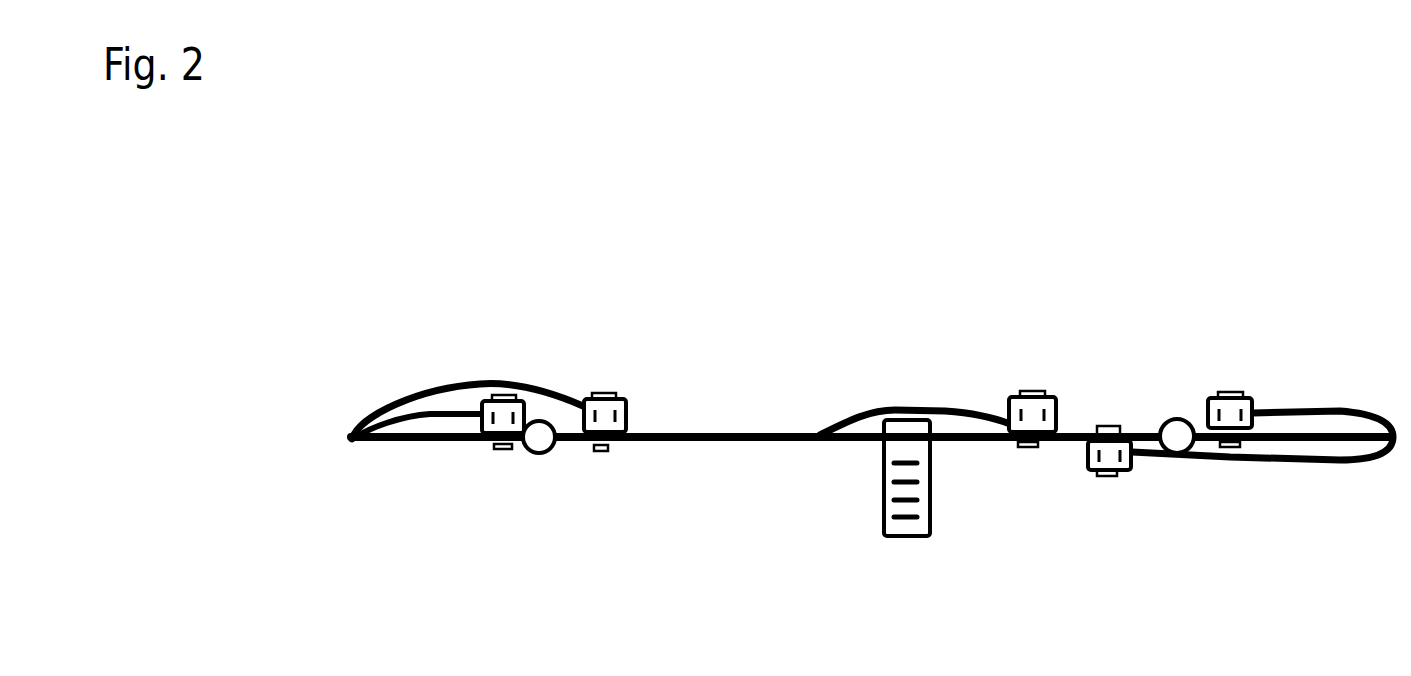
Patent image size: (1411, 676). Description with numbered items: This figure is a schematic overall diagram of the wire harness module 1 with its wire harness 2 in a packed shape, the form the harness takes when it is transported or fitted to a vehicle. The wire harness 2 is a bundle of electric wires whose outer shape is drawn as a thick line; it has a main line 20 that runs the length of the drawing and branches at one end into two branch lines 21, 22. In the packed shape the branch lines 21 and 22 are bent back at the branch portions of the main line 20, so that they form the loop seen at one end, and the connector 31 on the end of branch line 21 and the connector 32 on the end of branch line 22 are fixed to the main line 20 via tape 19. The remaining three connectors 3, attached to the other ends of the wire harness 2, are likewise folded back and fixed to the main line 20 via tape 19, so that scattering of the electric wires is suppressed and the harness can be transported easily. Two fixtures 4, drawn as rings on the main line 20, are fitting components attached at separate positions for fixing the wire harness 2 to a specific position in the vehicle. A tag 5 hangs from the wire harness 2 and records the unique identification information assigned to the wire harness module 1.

The wire harness module 1 is at (308, 318).
The wire harness 2 is at (773, 446).
The connectors 3 is at (857, 424).
The fixtures 4 is at (538, 453).
The tag 5 is at (912, 538).
The tape 19 is at (505, 450).
The main line 20 is at (706, 432).
The branch line 21 is at (513, 390).
The branch line 22 is at (424, 447).
The connector 31 is at (628, 400).
The connector 32 is at (477, 447).